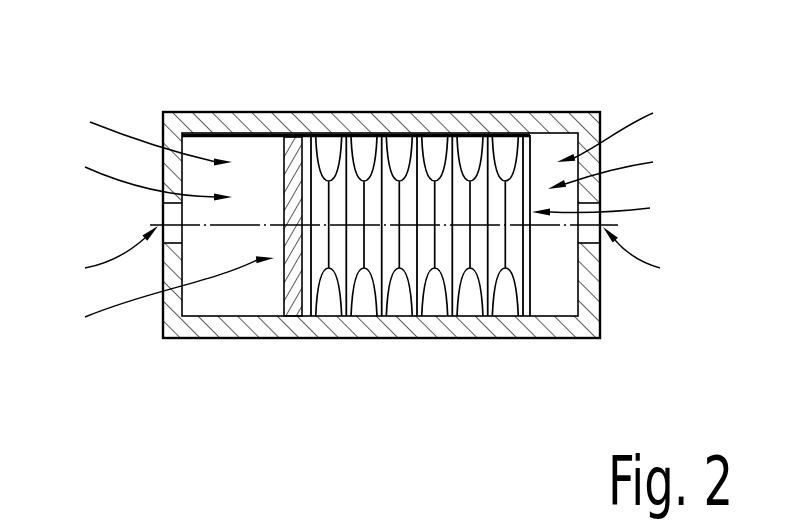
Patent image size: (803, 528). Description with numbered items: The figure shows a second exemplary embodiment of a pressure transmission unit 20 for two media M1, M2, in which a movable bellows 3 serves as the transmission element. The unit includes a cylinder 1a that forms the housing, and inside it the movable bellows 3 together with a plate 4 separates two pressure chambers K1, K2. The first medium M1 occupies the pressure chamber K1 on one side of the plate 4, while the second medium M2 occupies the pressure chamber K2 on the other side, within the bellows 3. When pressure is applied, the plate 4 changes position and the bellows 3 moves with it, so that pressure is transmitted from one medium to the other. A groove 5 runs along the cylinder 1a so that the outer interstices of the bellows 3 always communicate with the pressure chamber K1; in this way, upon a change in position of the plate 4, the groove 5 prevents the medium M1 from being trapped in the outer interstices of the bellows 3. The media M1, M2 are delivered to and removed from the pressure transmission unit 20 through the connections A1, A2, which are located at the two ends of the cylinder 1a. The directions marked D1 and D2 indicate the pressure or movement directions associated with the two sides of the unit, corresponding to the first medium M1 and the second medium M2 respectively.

The pressure transmission unit 20 is at (370, 225).
The cylinder 1a is at (347, 330).
The plate 4 is at (283, 287).
The movable bellows 3 is at (431, 181).
The groove 5 is at (265, 133).
The medium M1 is at (131, 130).
The pressure chamber K1 is at (132, 172).
The connection A1 is at (94, 258).
The first pressure direction D1 is at (152, 295).
The pressure chamber K2 is at (632, 129).
The medium M2 is at (627, 166).
The second pressure direction D2 is at (619, 209).
The connection A2 is at (656, 260).